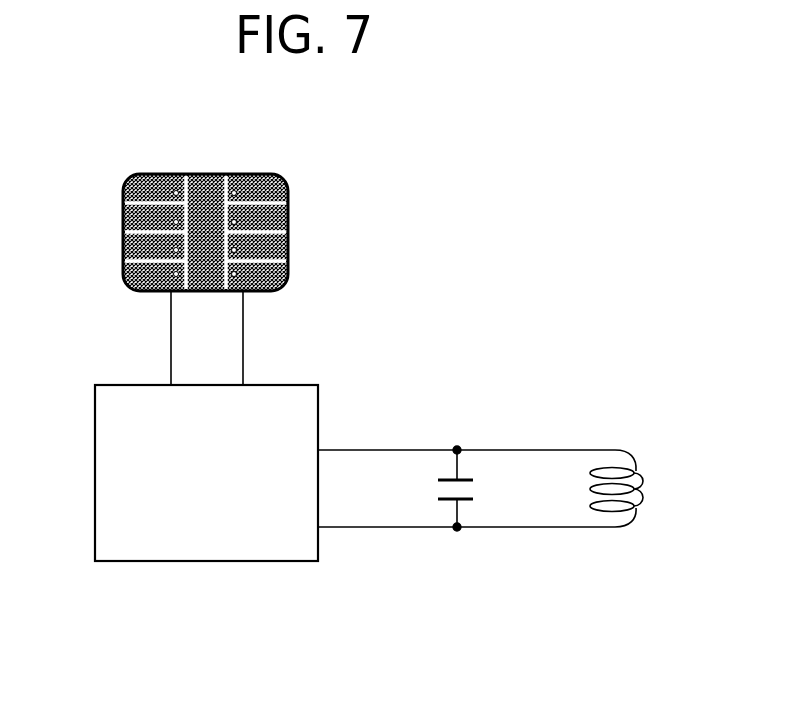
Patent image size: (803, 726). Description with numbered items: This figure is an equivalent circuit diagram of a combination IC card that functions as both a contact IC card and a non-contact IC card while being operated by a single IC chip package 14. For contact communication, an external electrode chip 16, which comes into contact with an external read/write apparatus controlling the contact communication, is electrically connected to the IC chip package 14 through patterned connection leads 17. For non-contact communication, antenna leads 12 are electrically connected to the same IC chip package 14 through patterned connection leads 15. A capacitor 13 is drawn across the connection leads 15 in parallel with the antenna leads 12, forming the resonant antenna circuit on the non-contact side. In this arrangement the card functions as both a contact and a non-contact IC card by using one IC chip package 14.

The antenna leads 12 is at (640, 495).
The capacitor 13 is at (475, 490).
The IC chip package 14 is at (210, 520).
The patterned connection leads 15 is at (400, 450).
The external electrode chip 16 is at (130, 250).
The patterned connection leads 17 is at (171, 350).